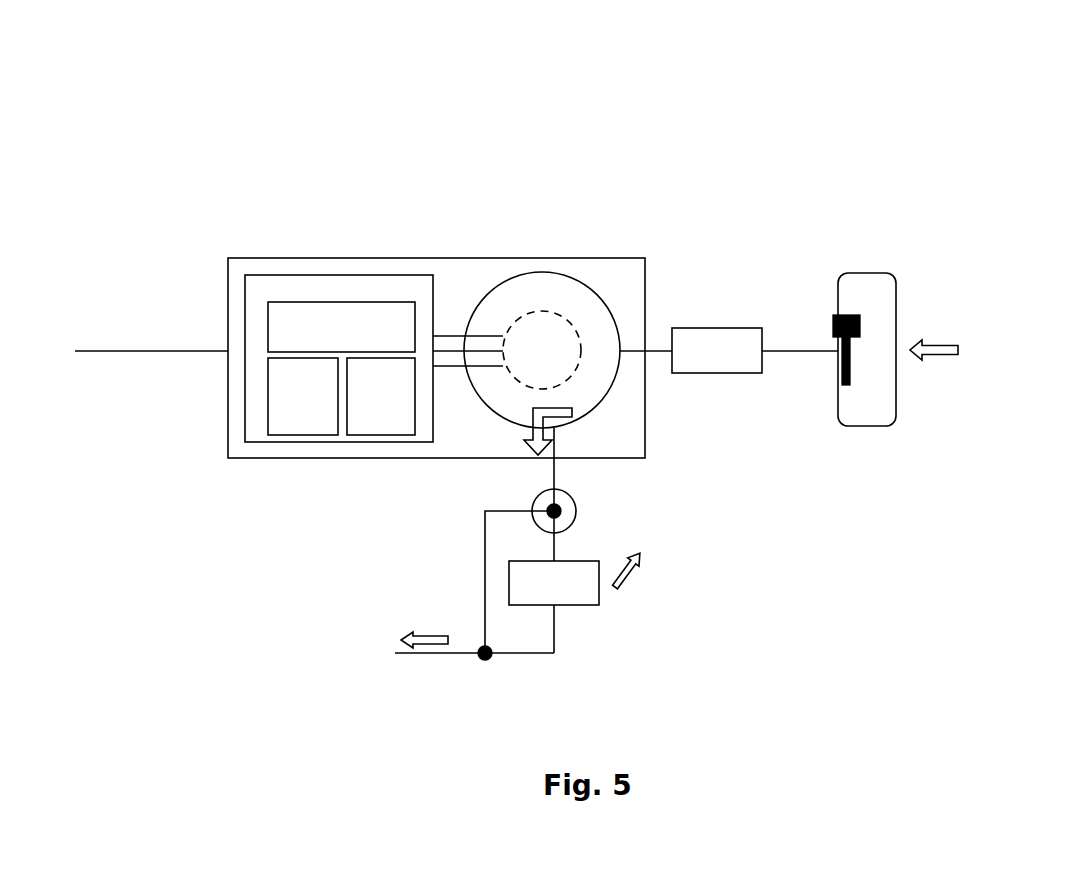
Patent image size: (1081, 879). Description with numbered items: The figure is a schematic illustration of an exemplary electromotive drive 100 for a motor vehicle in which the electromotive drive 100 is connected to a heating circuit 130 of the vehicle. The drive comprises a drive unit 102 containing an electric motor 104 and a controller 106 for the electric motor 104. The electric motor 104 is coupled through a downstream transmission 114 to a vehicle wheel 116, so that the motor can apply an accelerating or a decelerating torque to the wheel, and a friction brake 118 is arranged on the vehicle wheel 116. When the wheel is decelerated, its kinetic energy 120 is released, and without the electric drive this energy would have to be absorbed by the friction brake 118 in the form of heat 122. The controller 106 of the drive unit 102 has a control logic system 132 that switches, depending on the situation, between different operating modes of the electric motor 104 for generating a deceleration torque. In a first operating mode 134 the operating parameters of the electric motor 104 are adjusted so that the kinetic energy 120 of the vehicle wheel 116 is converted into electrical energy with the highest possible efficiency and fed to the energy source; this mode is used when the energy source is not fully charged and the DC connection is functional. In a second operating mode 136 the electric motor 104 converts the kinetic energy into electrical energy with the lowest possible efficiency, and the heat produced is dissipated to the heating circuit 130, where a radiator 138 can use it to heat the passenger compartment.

The electromotive drive 100 is at (853, 156).
The drive unit 102 is at (556, 258).
The electric motor 104 is at (597, 338).
The controller 106 is at (393, 275).
The transmission 114 is at (738, 358).
The vehicle wheel 116 is at (855, 415).
The friction brake 118 is at (857, 315).
The kinetic energy 120 is at (937, 348).
The heat 122 is at (538, 430).
The heating circuit 130 is at (441, 570).
The control logic system 132 is at (288, 322).
The first operating mode 134 is at (382, 402).
The second operating mode 136 is at (297, 415).
The radiator 138 is at (570, 588).